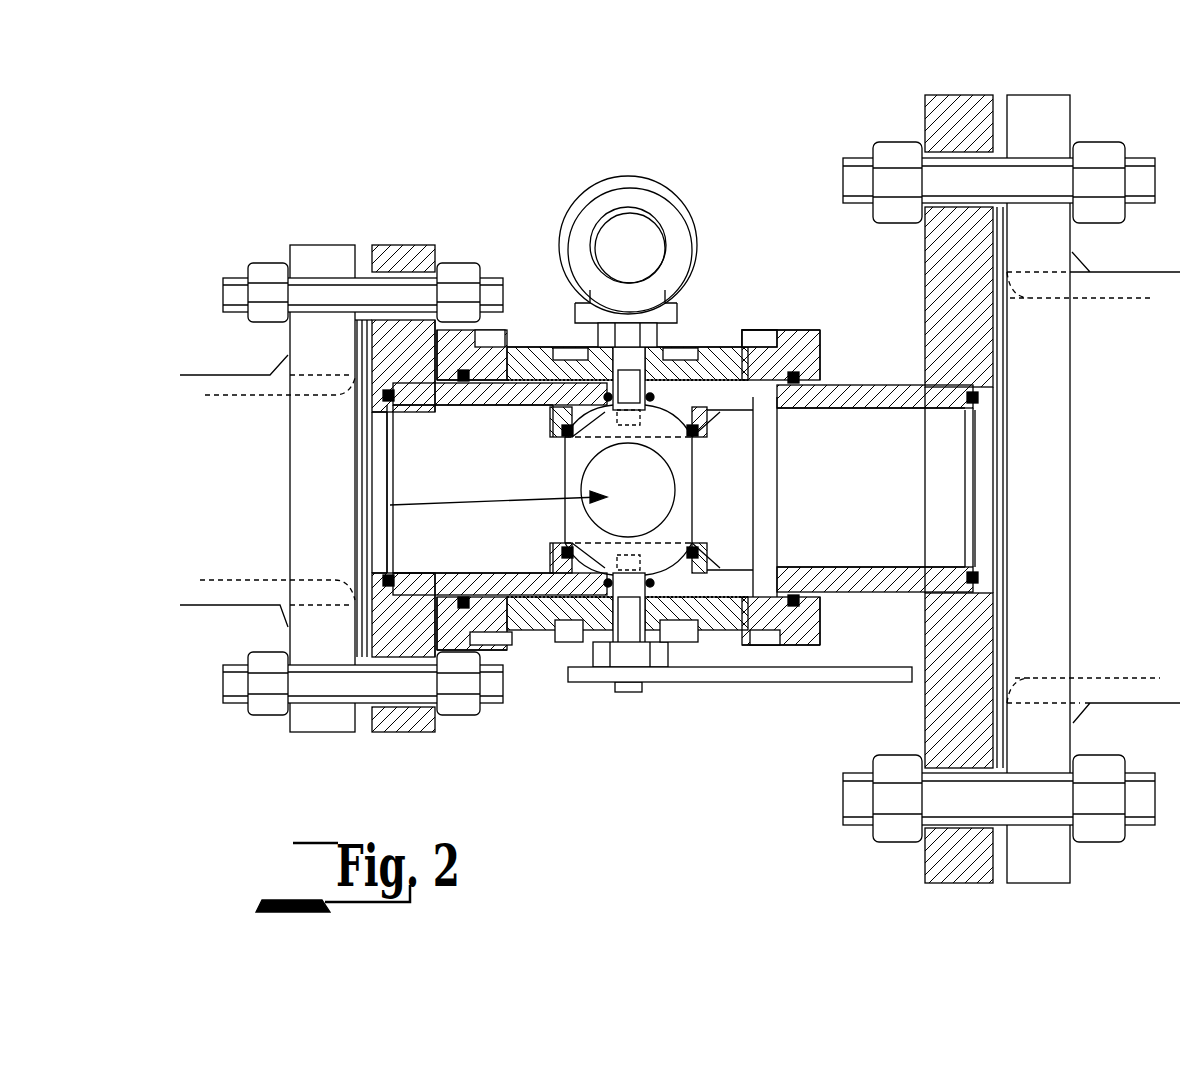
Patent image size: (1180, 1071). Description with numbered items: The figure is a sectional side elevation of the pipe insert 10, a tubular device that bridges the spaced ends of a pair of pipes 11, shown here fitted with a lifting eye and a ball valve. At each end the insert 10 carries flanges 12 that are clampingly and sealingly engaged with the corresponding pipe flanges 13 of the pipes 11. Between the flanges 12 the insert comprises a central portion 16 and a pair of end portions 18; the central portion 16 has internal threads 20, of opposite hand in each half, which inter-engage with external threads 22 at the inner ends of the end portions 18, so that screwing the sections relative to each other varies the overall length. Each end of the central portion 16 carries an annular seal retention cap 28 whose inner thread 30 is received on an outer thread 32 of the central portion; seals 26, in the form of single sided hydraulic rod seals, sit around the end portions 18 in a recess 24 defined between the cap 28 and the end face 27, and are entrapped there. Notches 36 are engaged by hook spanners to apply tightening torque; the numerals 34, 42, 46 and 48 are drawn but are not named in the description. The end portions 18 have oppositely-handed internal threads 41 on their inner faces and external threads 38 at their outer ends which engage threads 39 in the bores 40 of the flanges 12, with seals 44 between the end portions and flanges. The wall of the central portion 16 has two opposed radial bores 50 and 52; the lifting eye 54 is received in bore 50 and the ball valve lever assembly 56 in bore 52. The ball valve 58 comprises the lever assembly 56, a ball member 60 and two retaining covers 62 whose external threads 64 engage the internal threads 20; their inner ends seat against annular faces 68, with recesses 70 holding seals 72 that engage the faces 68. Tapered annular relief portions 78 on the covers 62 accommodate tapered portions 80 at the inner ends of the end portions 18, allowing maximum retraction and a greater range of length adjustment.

The pipe insert 10 is at (636, 808).
The pipes 11 is at (316, 745).
The flanges 12 is at (398, 250).
The pipe flanges 13 is at (328, 252).
The central portion 16 is at (690, 350).
The end portions 18 is at (873, 396).
The internal threads 20 is at (530, 345).
The external threads 22 is at (612, 653).
The recess 24 is at (850, 667).
The seals 26 is at (440, 345).
The end face 27 is at (437, 355).
The seal retention caps 28 is at (820, 345).
The inner thread 30 is at (515, 347).
The outer thread 32 is at (750, 635).
The retainer 34 is at (825, 380).
The notches 36 is at (490, 333).
The external threads 38 is at (383, 392).
The threads 39 is at (255, 297).
The bores 40 is at (385, 476).
The internal threads 41 is at (392, 435).
The gasket 42 is at (365, 352).
The seals 44 is at (388, 580).
The shoulder 46 is at (385, 580).
The interface 48 is at (378, 400).
The radial bore 50 is at (628, 377).
The radial bore 52 is at (630, 655).
The lifting eye 54 is at (608, 195).
The ball valve lever assembly 56 is at (617, 650).
The ball valve 58 is at (390, 505).
The ball member 60 is at (683, 458).
The ball member retaining covers 62 is at (752, 335).
The external threads 64 is at (580, 357).
The annular faces 68 is at (605, 397).
The recesses 70 is at (680, 455).
The seals 72 is at (600, 578).
The tapered annular relief portions 78 is at (682, 415).
The tapered portions 80 is at (756, 398).